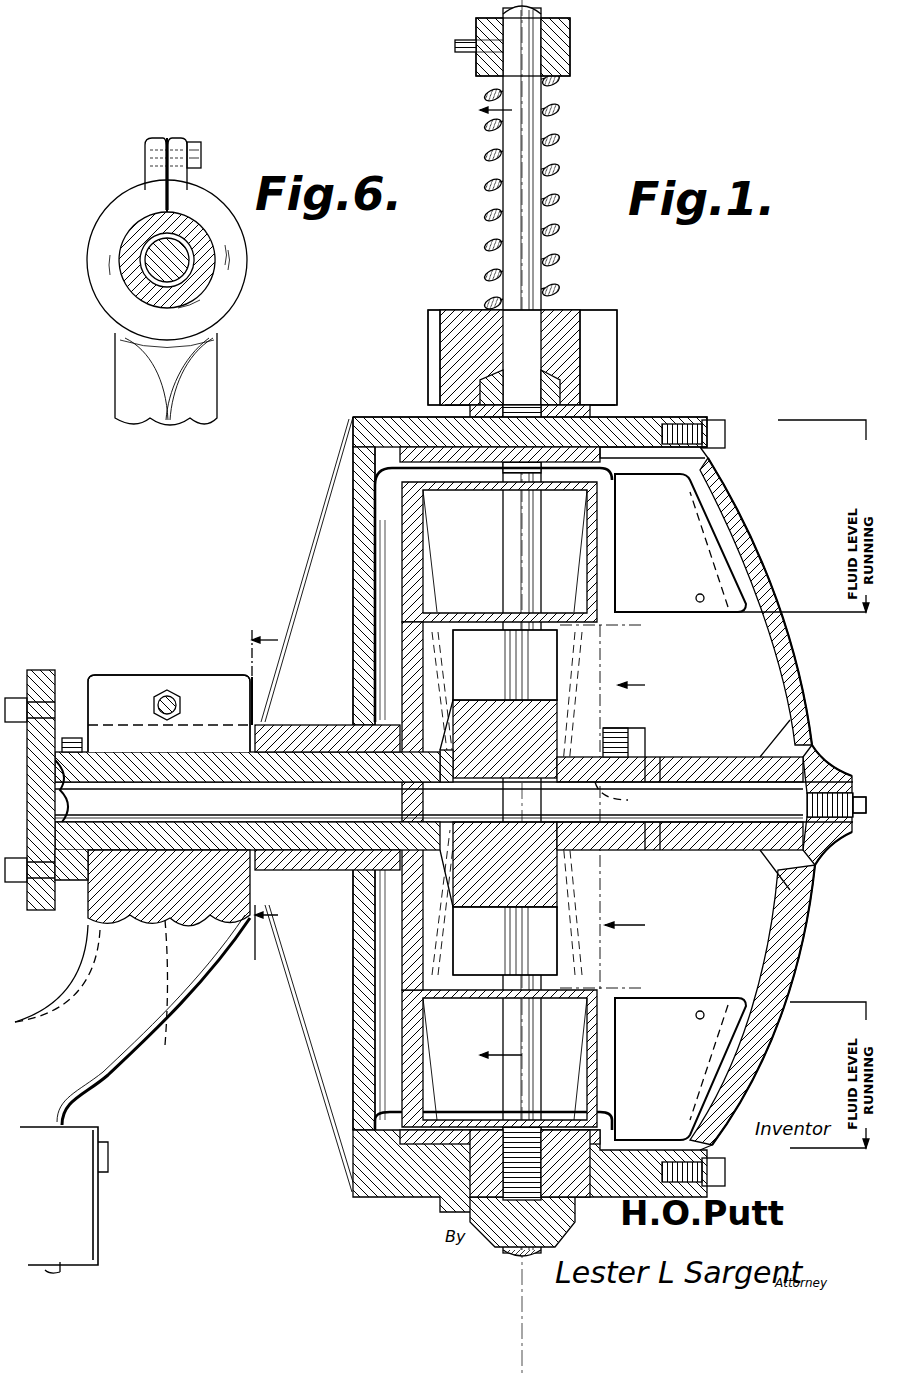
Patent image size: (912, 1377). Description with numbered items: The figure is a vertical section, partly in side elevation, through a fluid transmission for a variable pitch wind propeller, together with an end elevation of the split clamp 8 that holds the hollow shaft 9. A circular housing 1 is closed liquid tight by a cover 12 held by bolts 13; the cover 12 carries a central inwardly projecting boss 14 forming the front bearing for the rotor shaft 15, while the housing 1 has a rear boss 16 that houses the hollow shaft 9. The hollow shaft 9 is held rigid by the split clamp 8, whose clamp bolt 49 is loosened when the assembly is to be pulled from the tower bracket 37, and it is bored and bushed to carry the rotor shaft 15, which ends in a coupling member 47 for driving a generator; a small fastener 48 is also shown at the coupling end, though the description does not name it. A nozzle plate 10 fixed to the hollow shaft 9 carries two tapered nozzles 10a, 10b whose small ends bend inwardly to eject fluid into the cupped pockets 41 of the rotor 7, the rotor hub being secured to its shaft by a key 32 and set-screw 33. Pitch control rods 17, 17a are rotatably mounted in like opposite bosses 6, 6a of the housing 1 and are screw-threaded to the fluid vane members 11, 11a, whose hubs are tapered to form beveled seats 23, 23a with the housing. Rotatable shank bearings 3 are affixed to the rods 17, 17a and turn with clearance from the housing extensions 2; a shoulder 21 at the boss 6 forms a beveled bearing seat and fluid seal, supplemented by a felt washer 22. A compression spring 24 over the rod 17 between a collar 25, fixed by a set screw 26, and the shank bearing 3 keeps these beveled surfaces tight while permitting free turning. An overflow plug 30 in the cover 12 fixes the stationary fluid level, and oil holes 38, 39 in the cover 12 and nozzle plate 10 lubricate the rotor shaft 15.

In FIG. 1, the housing 1 is at (377, 428).
In FIG. 1, the housing extension 2 is at (432, 408).
In FIG. 1, the rotatable shank bearing 3 is at (605, 322).
In FIG. 1, the boss 6 is at (572, 388).
In FIG. 1, the boss 6a is at (560, 1232).
In FIG. 1, the rotor 7 is at (540, 680).
In FIG. 1, the split clamp 8 is at (120, 702).
In FIG. 6, the split clamp 8 is at (137, 203).
In FIG. 1, the hollow shaft 9 is at (300, 762).
In FIG. 6, the hollow shaft 9 is at (132, 245).
In FIG. 1, the nozzle plate 10 is at (410, 712).
In FIG. 1, the tapered nozzle 10a is at (600, 985).
In FIG. 1, the tapered nozzle 10b is at (600, 640).
In FIG. 1, the fluid vane member 11 is at (668, 612).
In FIG. 1, the fluid vane member 11a is at (668, 1010).
In FIG. 1, the cover 12 is at (815, 588).
In FIG. 1, the bolt 13 is at (726, 432).
In FIG. 1, the hollow shaft or boss 14 is at (655, 852).
In FIG. 1, the rotor shaft 15 is at (688, 790).
In FIG. 6, the rotor shaft 15 is at (152, 270).
In FIG. 1, the hollow shaft or boss 16 is at (316, 862).
In FIG. 1, the pitch control rod 17 is at (512, 188).
In FIG. 1, the pitch control rod 17a is at (505, 1250).
In FIG. 1, the shoulder 21 is at (485, 383).
In FIG. 1, the felt washer 22 is at (490, 352).
In FIG. 1, the beveled seat 23 is at (570, 472).
In FIG. 1, the beveled seat 23a is at (575, 1152).
In FIG. 1, the compression spring 24 is at (556, 140).
In FIG. 1, the collar 25 is at (476, 72).
In FIG. 1, the set screw 26 is at (470, 45).
In FIG. 1, the overflow plug 30 is at (858, 820).
In FIG. 1, the key 32 is at (615, 784).
In FIG. 1, the set-screw 33 is at (612, 730).
In FIG. 1, the tower bracket 37 is at (115, 1040).
In FIG. 6, the tower bracket 37 is at (210, 370).
In FIG. 1, the oil hole 38 is at (810, 748).
In FIG. 1, the oil hole 39 is at (428, 777).
In FIG. 1, the cupped pocket 41 is at (532, 657).
In FIG. 1, the coupling member 47 is at (41, 675).
In FIG. 1, the set screw 48 is at (70, 745).
In FIG. 1, the clamp bolt 49 is at (170, 695).
In FIG. 6, the clamp bolt 49 is at (200, 156).